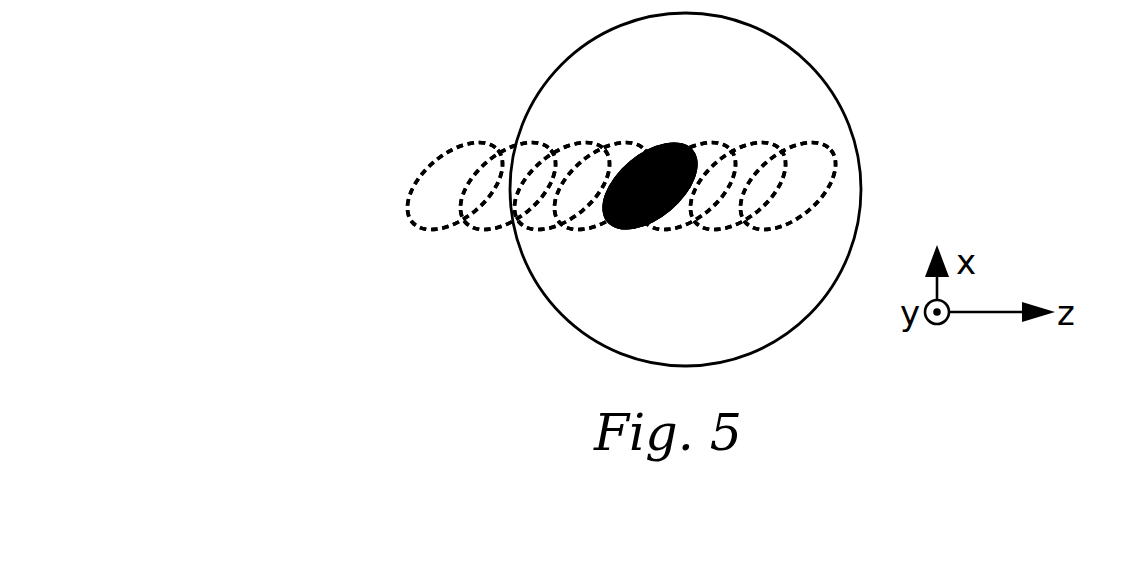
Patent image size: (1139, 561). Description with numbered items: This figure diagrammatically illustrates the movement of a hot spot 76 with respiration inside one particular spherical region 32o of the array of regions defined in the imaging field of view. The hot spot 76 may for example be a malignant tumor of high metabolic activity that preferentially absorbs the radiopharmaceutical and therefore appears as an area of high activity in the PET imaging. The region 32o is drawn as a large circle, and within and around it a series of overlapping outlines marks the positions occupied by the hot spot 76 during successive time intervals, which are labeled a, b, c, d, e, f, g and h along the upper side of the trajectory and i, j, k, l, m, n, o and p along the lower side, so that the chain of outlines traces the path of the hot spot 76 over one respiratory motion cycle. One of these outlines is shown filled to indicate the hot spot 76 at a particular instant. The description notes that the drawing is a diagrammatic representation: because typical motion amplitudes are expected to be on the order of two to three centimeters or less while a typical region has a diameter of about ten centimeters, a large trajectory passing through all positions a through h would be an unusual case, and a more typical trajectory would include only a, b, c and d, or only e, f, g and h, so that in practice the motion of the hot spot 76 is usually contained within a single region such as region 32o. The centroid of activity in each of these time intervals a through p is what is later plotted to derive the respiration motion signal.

The region 32o is at (830, 83).
The hot spot 76 is at (607, 193).
The time interval a is at (455, 173).
The time interval b is at (508, 173).
The time interval c is at (562, 173).
The time interval d is at (602, 173).
The time interval e is at (650, 173).
The time interval f is at (688, 173).
The time interval g is at (738, 173).
The time interval h is at (788, 173).
The time interval i is at (788, 194).
The time interval j is at (738, 194).
The time interval k is at (688, 194).
The time interval l is at (650, 194).
The time interval m is at (602, 194).
The time interval n is at (562, 194).
The time interval o is at (508, 194).
The time interval p is at (455, 194).